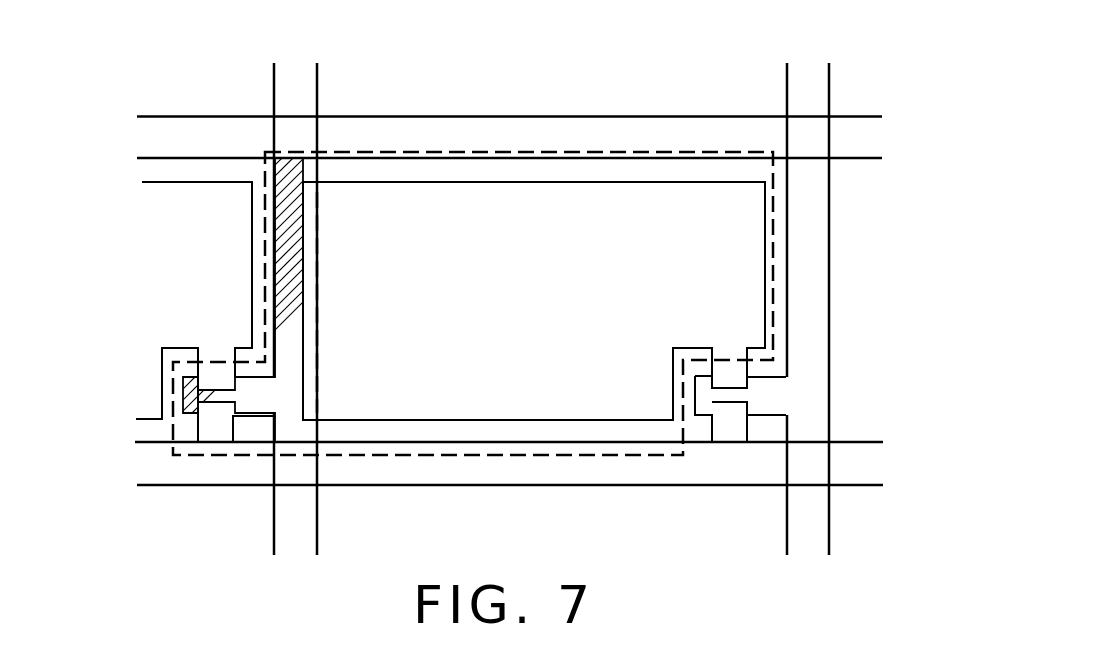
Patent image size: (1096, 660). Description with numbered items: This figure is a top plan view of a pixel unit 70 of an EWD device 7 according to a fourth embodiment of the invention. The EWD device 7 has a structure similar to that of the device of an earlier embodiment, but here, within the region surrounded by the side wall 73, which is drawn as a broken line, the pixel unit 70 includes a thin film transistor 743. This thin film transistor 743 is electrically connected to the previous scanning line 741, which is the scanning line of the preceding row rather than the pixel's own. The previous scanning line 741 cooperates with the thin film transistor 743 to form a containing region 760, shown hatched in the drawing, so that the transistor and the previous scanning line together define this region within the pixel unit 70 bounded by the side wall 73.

The EWD device 7 is at (539, 39).
The pixel unit 70 is at (594, 114).
The side wall 73 is at (695, 150).
The previous scanning line 741 is at (310, 93).
The thin film transistor 743 is at (186, 422).
The containing region 760 is at (288, 193).